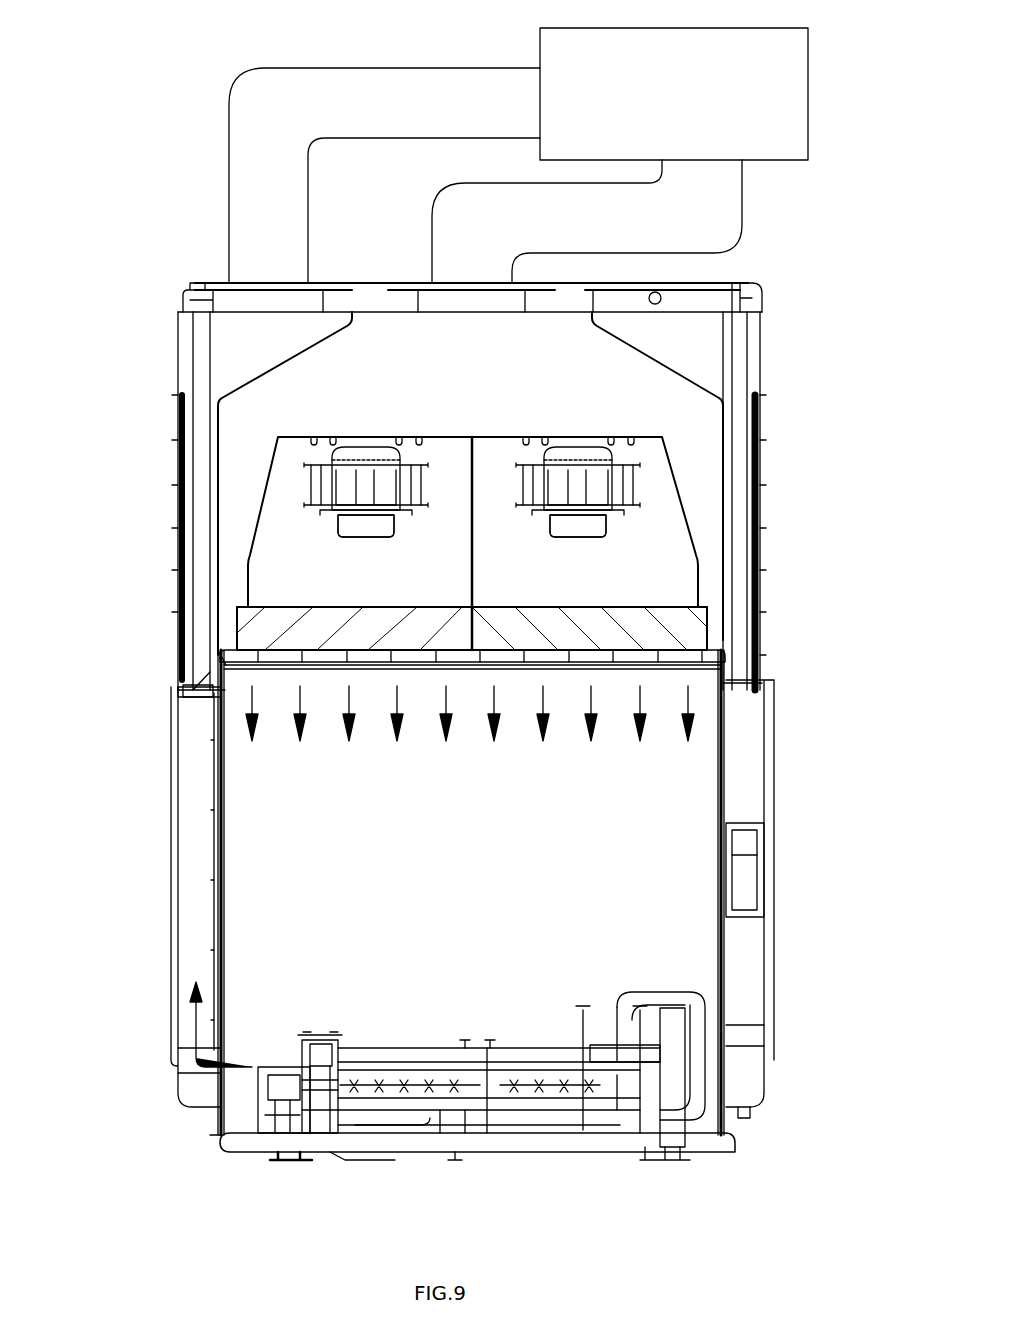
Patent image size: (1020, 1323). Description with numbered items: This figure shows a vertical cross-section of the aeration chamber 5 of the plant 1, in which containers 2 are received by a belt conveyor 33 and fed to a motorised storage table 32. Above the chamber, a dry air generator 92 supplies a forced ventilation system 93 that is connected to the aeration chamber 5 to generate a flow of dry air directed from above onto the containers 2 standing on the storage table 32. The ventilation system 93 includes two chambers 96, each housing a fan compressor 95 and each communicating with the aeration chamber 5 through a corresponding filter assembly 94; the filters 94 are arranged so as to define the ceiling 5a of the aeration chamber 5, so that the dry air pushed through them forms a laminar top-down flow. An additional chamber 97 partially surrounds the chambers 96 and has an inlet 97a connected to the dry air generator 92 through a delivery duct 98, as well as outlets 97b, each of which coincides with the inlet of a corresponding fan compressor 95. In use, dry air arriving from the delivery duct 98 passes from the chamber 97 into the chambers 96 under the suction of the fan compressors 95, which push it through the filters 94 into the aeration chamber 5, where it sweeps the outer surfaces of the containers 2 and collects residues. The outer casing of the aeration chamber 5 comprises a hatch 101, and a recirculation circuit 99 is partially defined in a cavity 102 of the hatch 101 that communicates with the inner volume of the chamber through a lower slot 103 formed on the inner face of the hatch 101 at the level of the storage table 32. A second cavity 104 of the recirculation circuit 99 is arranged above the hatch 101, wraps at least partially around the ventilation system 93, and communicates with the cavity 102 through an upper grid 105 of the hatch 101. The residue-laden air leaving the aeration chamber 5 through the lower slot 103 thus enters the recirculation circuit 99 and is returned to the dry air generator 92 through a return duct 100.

The plant 1 is at (147, 147).
The containers 2 is at (330, 1040).
The aeration chamber 5 is at (684, 800).
The ceiling 5a is at (694, 682).
The storage table 32 is at (421, 1041).
The belt conveyor 33 is at (335, 1110).
The dry air generator 92 is at (648, 109).
The forced ventilation system 93 is at (783, 368).
The filters 94 is at (280, 615).
The fan compressor 95 is at (408, 520).
The chambers 96 is at (518, 440).
The additional chamber 97 is at (655, 375).
The inlet 97a is at (459, 316).
The outlets 97b is at (363, 438).
The delivery duct 98 is at (728, 185).
The recirculation circuit 99 is at (196, 770).
The return duct 100 is at (317, 80).
The hatch 101 is at (150, 925).
The cavity 102 is at (195, 960).
The lower slot 103 is at (233, 1088).
The second cavity 104 is at (186, 360).
The upper grid 105 is at (195, 685).